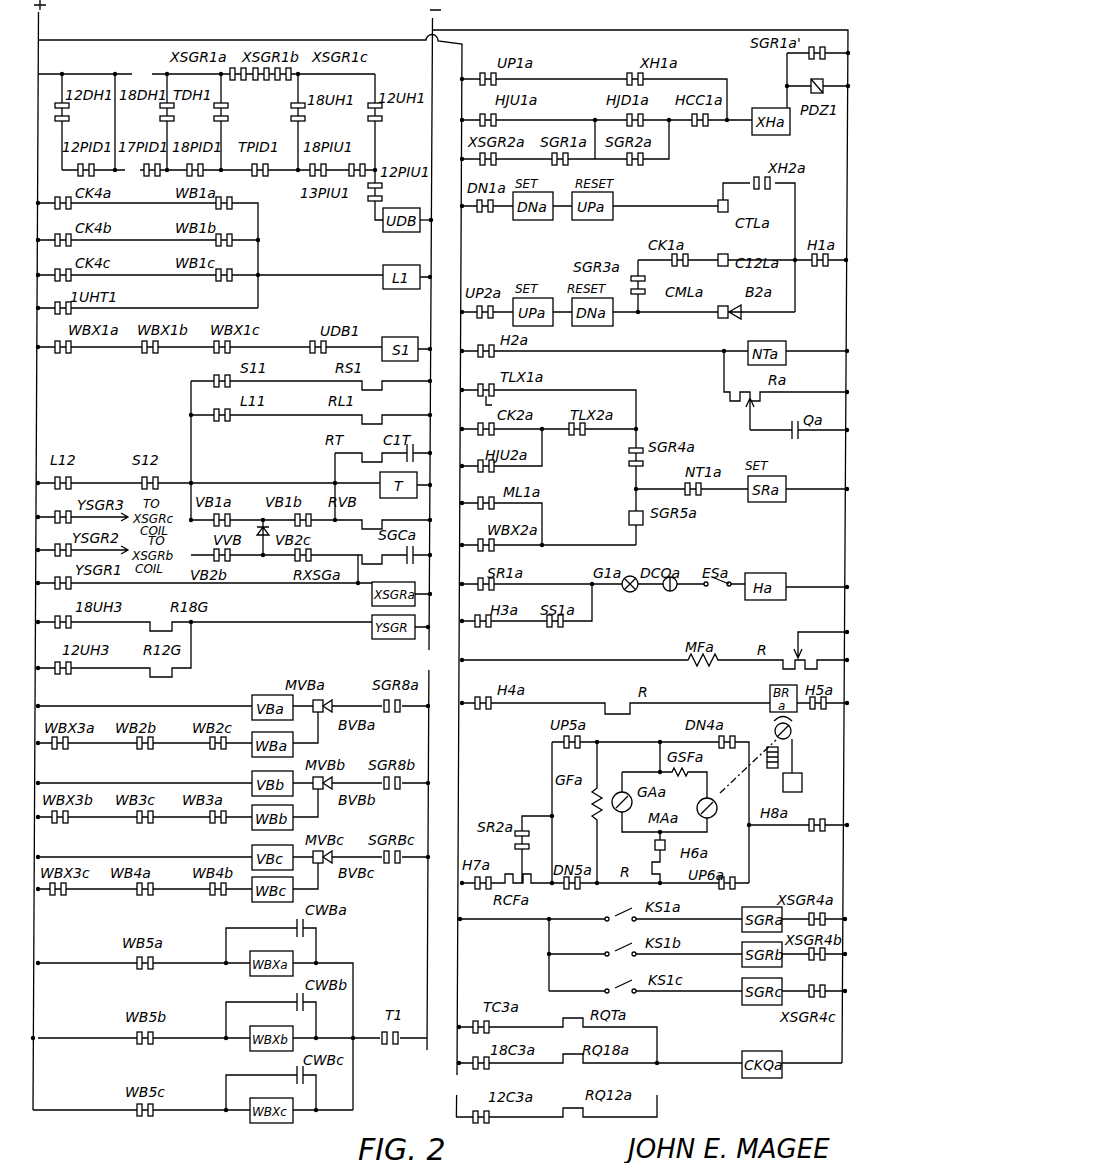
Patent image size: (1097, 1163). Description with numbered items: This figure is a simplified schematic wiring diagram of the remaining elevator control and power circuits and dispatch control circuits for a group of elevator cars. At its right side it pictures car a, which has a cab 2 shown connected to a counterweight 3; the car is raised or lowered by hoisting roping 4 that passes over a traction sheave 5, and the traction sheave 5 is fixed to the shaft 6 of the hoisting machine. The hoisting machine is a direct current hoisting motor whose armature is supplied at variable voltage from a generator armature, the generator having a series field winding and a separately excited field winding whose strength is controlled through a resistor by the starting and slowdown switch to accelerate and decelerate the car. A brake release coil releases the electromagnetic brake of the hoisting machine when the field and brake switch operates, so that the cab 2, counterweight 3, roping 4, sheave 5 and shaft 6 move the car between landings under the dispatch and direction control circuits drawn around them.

The cab 2 is at (802, 782).
The counterweight 3 is at (769, 768).
The hoisting roping 4 is at (794, 752).
The traction sheave 5 is at (792, 731).
The shaft 6 is at (745, 770).